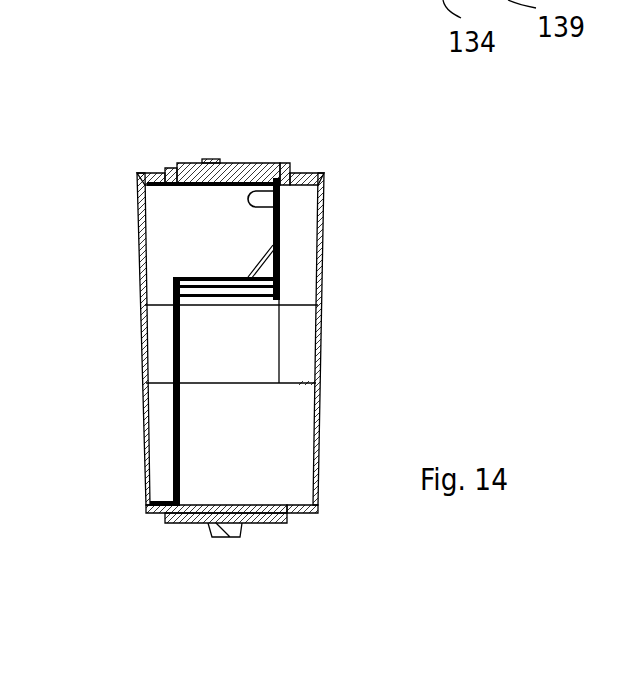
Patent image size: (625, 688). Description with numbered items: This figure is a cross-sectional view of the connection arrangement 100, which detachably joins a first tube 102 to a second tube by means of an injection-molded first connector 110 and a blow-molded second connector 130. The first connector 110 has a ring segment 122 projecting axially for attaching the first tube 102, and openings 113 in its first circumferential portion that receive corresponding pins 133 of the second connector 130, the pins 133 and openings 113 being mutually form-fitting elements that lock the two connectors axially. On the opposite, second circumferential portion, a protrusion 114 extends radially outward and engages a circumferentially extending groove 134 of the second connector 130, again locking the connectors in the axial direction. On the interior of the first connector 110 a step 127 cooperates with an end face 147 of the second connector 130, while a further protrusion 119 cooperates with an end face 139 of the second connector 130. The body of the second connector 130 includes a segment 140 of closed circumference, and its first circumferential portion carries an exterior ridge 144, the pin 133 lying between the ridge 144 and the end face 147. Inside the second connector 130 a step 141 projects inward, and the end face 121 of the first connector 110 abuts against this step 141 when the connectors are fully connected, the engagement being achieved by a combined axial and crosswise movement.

The connection arrangement 100 is at (116, 73).
The first tube 102 is at (323, 293).
The first connector 110 is at (306, 168).
The openings 113 is at (187, 163).
The protrusion 114 is at (208, 533).
The protrusion 119 is at (290, 523).
The end face 121 is at (175, 444).
The ring segment 122 is at (323, 172).
The step 127 is at (278, 210).
The second connector 130 is at (142, 174).
The pins 133 is at (208, 160).
The groove 134 is at (237, 533).
The end face 139 is at (288, 523).
The segment 140 is at (138, 179).
The step 141 is at (192, 503).
The ridge 144 is at (163, 168).
The end face 147 is at (290, 163).